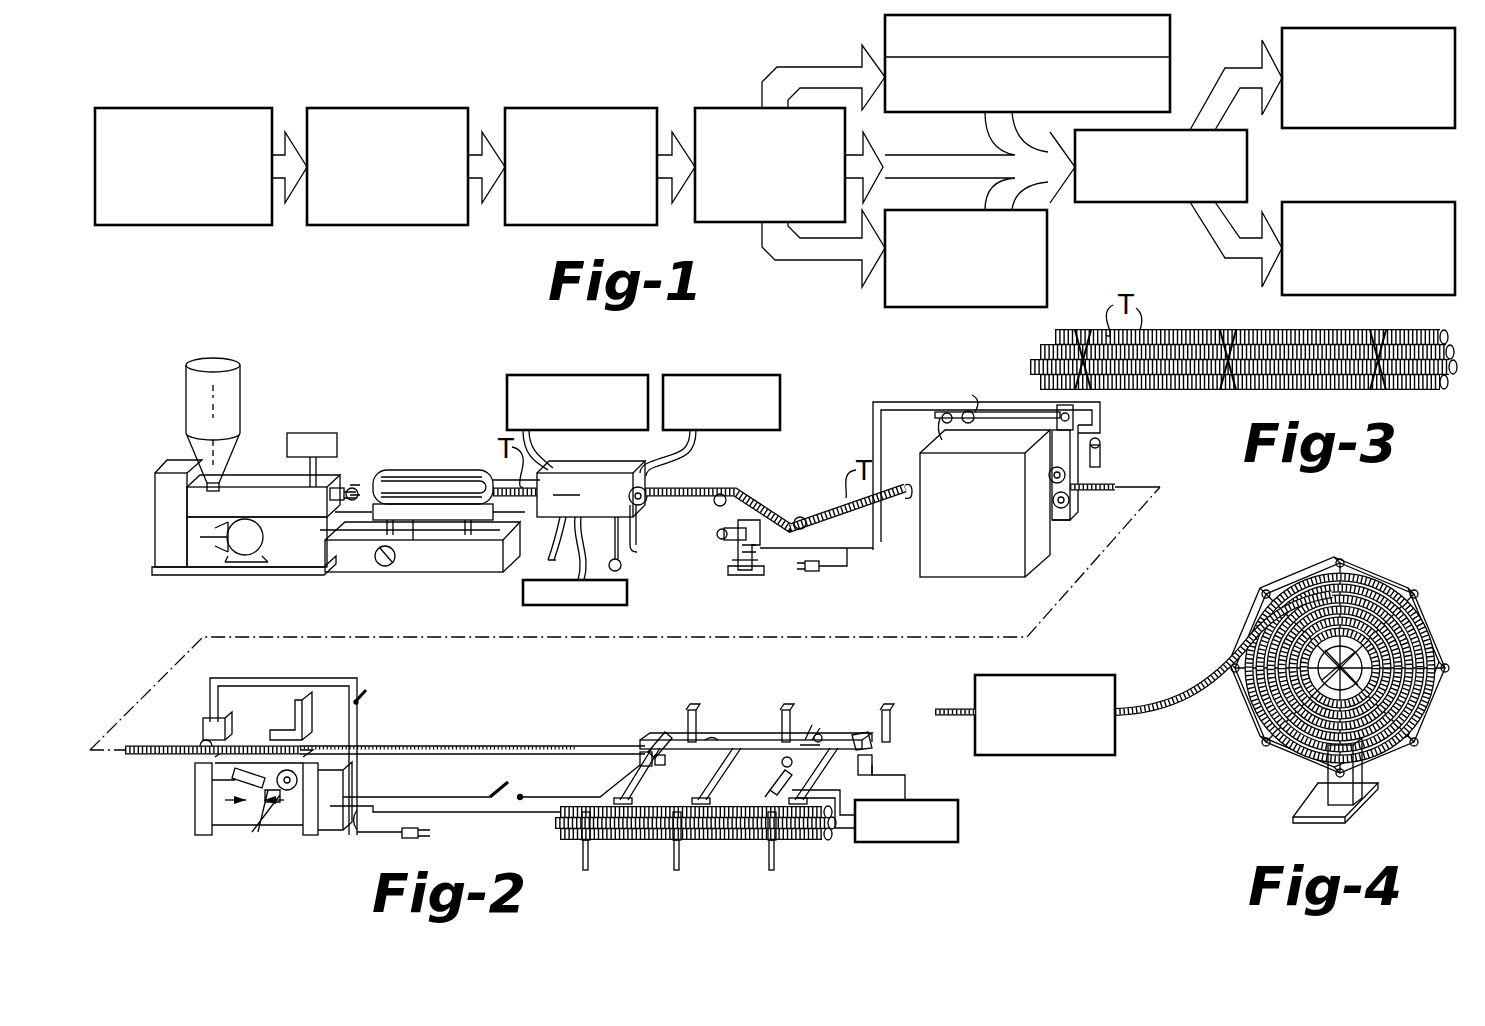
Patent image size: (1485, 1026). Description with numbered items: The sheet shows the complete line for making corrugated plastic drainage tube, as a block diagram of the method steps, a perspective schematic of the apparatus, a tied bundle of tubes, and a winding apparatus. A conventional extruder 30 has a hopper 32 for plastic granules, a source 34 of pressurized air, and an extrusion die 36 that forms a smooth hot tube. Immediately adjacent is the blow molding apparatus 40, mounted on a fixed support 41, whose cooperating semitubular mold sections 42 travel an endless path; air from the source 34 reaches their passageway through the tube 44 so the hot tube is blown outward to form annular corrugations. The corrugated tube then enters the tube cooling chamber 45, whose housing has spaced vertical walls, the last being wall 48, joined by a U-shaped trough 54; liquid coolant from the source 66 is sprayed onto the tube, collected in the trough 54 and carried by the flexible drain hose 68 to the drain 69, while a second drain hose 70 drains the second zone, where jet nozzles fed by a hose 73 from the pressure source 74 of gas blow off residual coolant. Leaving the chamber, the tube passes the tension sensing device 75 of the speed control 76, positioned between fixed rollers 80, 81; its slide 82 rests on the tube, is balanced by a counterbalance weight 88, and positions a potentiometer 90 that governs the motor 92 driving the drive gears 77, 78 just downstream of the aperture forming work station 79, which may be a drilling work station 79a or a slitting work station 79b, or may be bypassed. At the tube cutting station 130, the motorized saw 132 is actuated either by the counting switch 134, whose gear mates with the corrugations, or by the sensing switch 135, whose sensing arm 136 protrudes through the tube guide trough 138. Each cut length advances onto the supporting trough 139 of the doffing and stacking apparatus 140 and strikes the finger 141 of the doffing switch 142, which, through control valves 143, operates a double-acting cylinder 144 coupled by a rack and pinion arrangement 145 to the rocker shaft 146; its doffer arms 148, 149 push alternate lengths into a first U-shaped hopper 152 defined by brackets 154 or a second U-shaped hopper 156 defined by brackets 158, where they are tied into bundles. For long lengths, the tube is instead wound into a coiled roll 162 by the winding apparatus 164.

In FIG. 1, the extruder 30 is at (216, 106).
In FIG. 2, the extruder 30 is at (265, 430).
In FIG. 2, the hopper 32 is at (213, 360).
In FIG. 2, the source of pressurized air 34 is at (323, 432).
In FIG. 2, the extrusion die 36 is at (355, 488).
In FIG. 1, the blow molding apparatus 40 is at (370, 106).
In FIG. 2, the blow molding apparatus 40 is at (428, 465).
In FIG. 2, the fixed support 41 is at (457, 565).
In FIG. 2, the mold sections 42 is at (418, 520).
In FIG. 2, the tube 44 is at (347, 490).
In FIG. 1, the tube cooling chamber 45 is at (568, 106).
In FIG. 2, the tube cooling chamber 45 is at (582, 470).
In FIG. 2, the vertical wall 48 is at (640, 508).
In FIG. 2, the trough 54 is at (568, 520).
In FIG. 2, the source 66 is at (578, 380).
In FIG. 2, the flexible drain hose 68 is at (574, 568).
In FIG. 2, the drain 69 is at (628, 596).
In FIG. 2, the second drain hose 70 is at (622, 565).
In FIG. 2, the hose 73 is at (694, 446).
In FIG. 2, the pressure source of gas 74 is at (760, 380).
In FIG. 2, the tension sensing device 75 is at (733, 553).
In FIG. 1, the speed control 76 is at (753, 106).
In FIG. 2, the speed control 76 is at (825, 462).
In FIG. 2, the drive gear 77 is at (1085, 480).
In FIG. 2, the drive gear 78 is at (1078, 495).
In FIG. 2, the aperture forming work station 79 is at (1000, 448).
In FIG. 1, the drilling work station 79a is at (882, 20).
In FIG. 1, the slitting work station 79b is at (886, 304).
In FIG. 2, the fixed roller 80 is at (730, 490).
In FIG. 2, the fixed roller 81 is at (912, 490).
In FIG. 2, the slide 82 is at (806, 503).
In FIG. 2, the counterbalance weight 88 is at (728, 530).
In FIG. 2, the potentiometer 90 is at (752, 570).
In FIG. 2, the motor 92 is at (1082, 426).
In FIG. 1, the tube cutting station 130 is at (1153, 204).
In FIG. 2, the tube cutting station 130 is at (265, 843).
In FIG. 2, the motorized saw 132 is at (267, 807).
In FIG. 2, the counting switch 134 is at (204, 728).
In FIG. 2, the sensing switch 135 is at (645, 760).
In FIG. 2, the sensing arm 136 is at (650, 738).
In FIG. 2, the tube guide trough 138 is at (472, 752).
In FIG. 2, the supporting trough 139 is at (715, 740).
In FIG. 1, the doffing and stacking apparatus 140 is at (1413, 130).
In FIG. 2, the doffing and stacking apparatus 140 is at (838, 690).
In FIG. 2, the finger 141 is at (866, 742).
In FIG. 2, the doffing switch 142 is at (880, 770).
In FIG. 2, the control valves 143 is at (923, 842).
In FIG. 2, the double-acting cylinder 144 is at (774, 787).
In FIG. 2, the rack and pinion arrangement 145 is at (782, 768).
In FIG. 2, the rocker shaft 146 is at (695, 765).
In FIG. 2, the doffer arms 148 is at (800, 738).
In FIG. 2, the doffer arms 149 is at (840, 710).
In FIG. 2, the first U-shaped hopper 152 is at (688, 710).
In FIG. 2, the brackets 154 is at (700, 715).
In FIG. 2, the second U-shaped hopper 156 is at (560, 830).
In FIG. 2, the brackets 158 is at (590, 840).
In FIG. 4, the coiled roll 162 is at (1258, 722).
In FIG. 1, the winding apparatus 164 is at (1280, 293).
In FIG. 4, the winding apparatus 164 is at (1263, 587).